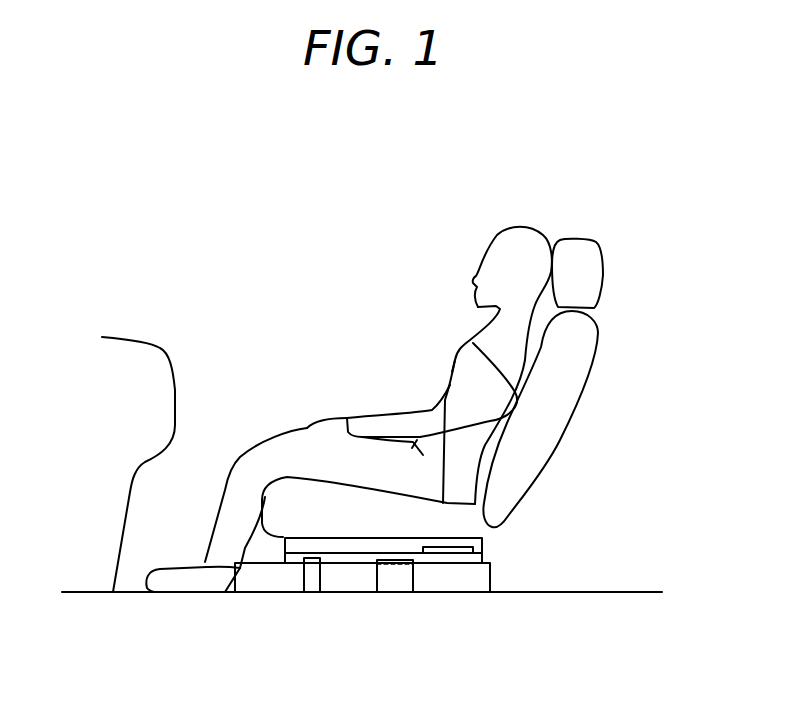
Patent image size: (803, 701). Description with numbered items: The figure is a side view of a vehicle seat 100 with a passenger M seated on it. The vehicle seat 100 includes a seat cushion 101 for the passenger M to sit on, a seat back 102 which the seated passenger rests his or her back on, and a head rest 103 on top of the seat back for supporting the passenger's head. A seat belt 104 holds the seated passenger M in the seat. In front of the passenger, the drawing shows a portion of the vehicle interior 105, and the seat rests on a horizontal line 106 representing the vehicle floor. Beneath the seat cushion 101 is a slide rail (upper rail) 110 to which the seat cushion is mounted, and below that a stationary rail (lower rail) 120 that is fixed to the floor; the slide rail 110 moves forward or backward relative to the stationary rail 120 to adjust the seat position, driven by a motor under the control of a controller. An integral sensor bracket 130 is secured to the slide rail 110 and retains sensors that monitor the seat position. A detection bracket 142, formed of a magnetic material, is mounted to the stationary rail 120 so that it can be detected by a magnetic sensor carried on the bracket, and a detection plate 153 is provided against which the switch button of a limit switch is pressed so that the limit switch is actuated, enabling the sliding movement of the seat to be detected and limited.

The vehicle seat 100 is at (410, 195).
The seat cushion 101 is at (288, 507).
The seat back 102 is at (558, 395).
The head rest 103 is at (590, 270).
The seat belt 104 is at (462, 358).
The instrument panel 105 is at (137, 352).
The vehicle floor 106 is at (647, 590).
The slide rail (upper rail) 110 is at (482, 555).
The stationary rail (lower rail) 120 is at (245, 587).
The integral sensor bracket 130 is at (448, 553).
The detection bracket 142 is at (392, 588).
The detection plate 153 is at (313, 588).
The passenger M is at (528, 237).